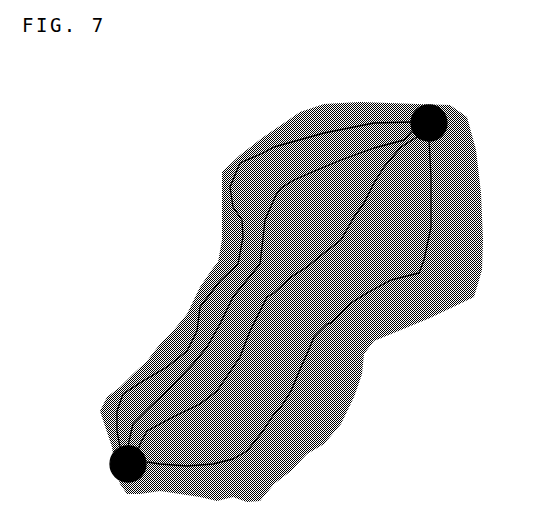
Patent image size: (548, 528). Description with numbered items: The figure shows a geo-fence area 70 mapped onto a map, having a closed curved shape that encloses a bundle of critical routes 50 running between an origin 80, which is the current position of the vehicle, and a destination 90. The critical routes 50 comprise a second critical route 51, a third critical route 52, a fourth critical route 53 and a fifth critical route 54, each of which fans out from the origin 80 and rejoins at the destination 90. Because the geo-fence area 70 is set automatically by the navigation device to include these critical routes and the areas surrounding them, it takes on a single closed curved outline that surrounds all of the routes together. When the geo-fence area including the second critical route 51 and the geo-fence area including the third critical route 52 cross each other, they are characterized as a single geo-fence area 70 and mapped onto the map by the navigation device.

The critical routes 50 is at (274, 293).
The second critical route 51 is at (235, 167).
The third critical route 52 is at (281, 187).
The fourth critical route 53 is at (352, 213).
The fifth critical route 54 is at (309, 352).
The geo-fence area 70 is at (367, 351).
The origin 80 is at (110, 464).
The destination 90 is at (447, 119).